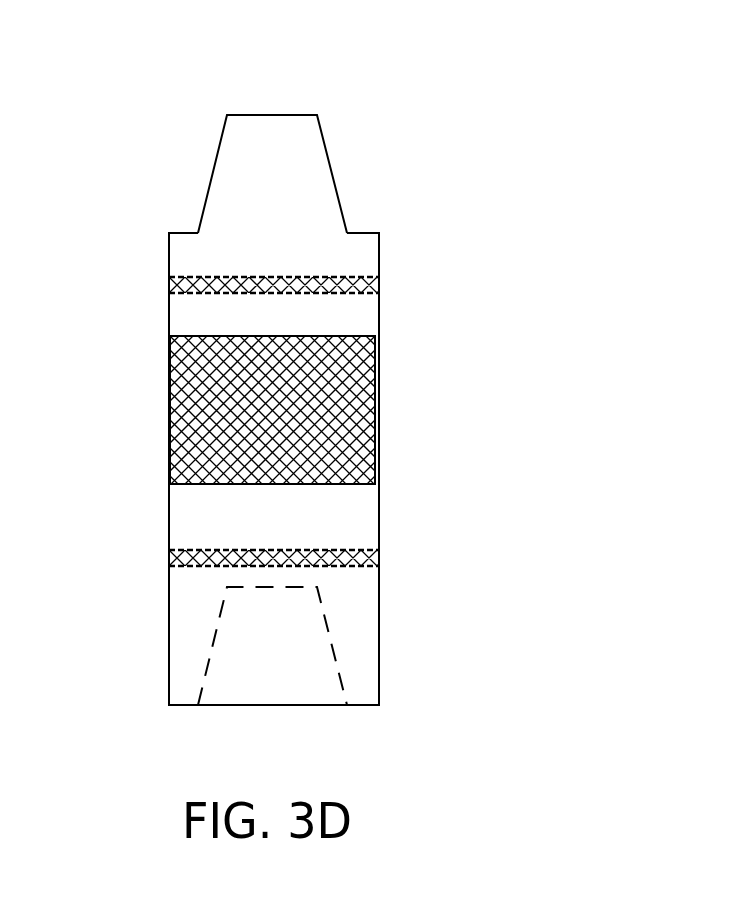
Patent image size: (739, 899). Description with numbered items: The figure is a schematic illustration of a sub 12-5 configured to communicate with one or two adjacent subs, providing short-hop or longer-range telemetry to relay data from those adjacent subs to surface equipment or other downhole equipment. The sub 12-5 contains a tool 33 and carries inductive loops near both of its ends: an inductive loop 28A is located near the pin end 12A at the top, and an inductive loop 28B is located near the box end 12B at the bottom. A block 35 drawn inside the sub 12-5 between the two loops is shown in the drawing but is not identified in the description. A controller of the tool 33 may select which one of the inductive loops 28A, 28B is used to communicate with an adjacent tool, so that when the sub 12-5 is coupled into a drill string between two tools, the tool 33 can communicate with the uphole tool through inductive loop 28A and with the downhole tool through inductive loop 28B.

The pin end 12A is at (317, 115).
The box end 12B is at (347, 705).
The sub 12-5 is at (169, 528).
The inductive loop 28A is at (379, 278).
The inductive loop 28B is at (379, 565).
The catalyst / adsorbent bed 35 is at (379, 409).
The tool 33 is at (379, 647).